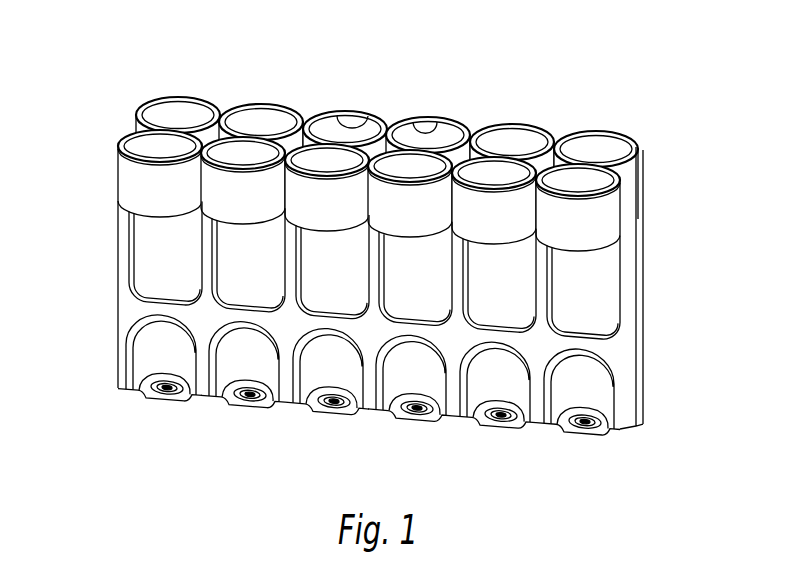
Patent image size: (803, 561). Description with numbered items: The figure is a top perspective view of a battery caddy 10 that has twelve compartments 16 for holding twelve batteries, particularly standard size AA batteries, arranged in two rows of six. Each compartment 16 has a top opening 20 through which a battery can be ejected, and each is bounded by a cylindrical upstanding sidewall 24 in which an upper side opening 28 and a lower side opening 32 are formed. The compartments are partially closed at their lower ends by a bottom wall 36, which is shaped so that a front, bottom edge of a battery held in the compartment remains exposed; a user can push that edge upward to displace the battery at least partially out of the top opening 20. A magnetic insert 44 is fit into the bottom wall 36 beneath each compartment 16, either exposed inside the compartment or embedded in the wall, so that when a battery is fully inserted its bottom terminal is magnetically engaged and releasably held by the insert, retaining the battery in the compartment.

The battery caddy 10 is at (644, 213).
The compartment 16 is at (251, 197).
The top opening 20 is at (413, 122).
The cylindrical upstanding sidewall 24 is at (118, 238).
The upper side opening 28 is at (622, 292).
The lower side opening 32 is at (603, 367).
The bottom wall 36 is at (607, 431).
The magnetic insert 44 is at (166, 383).